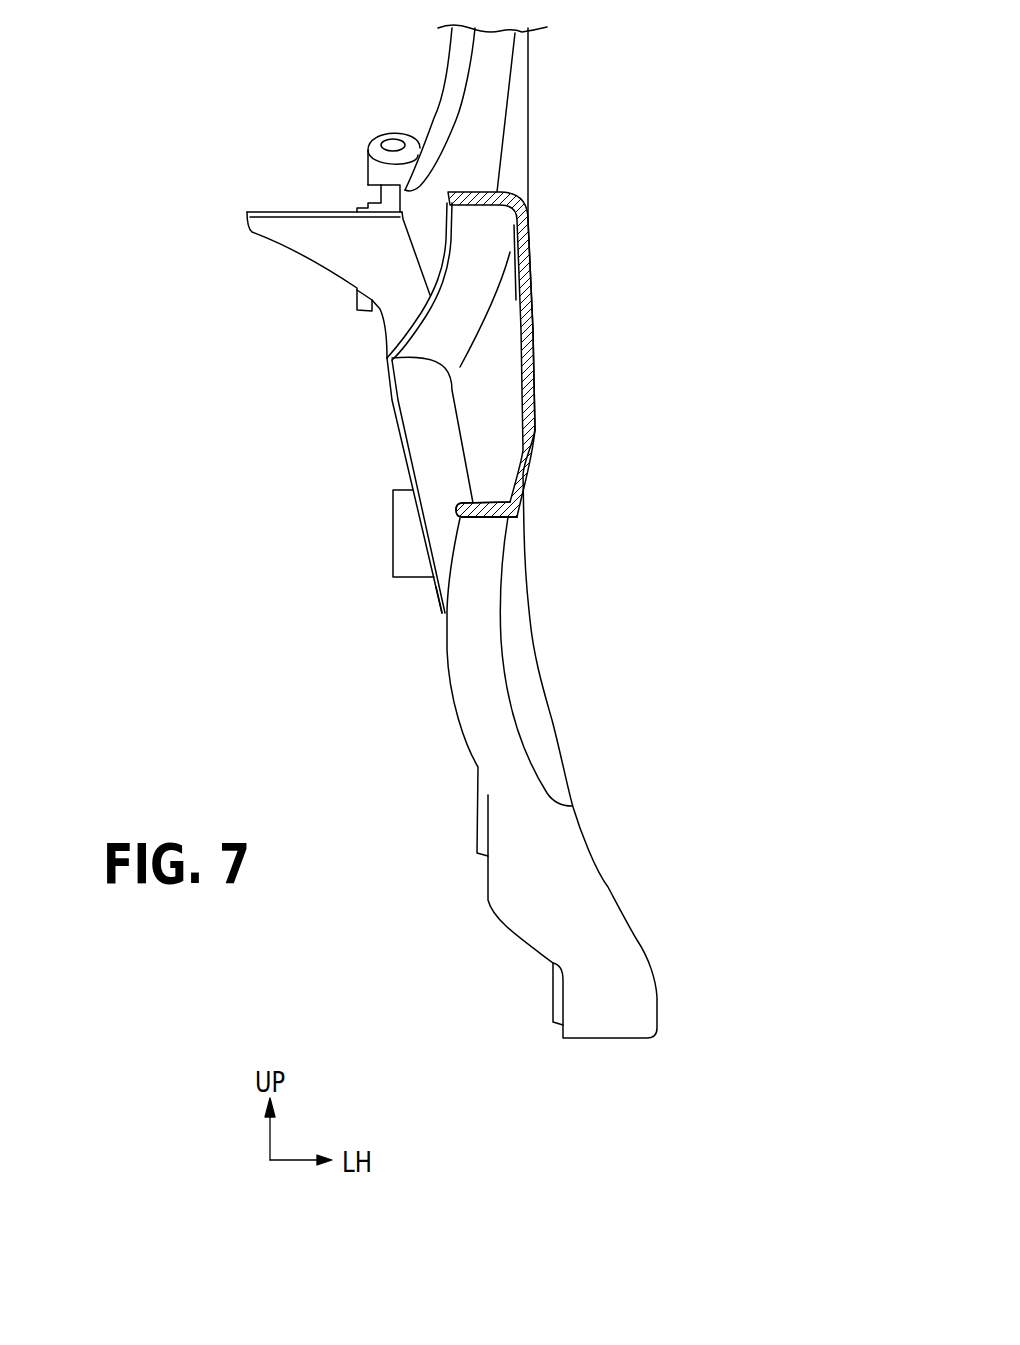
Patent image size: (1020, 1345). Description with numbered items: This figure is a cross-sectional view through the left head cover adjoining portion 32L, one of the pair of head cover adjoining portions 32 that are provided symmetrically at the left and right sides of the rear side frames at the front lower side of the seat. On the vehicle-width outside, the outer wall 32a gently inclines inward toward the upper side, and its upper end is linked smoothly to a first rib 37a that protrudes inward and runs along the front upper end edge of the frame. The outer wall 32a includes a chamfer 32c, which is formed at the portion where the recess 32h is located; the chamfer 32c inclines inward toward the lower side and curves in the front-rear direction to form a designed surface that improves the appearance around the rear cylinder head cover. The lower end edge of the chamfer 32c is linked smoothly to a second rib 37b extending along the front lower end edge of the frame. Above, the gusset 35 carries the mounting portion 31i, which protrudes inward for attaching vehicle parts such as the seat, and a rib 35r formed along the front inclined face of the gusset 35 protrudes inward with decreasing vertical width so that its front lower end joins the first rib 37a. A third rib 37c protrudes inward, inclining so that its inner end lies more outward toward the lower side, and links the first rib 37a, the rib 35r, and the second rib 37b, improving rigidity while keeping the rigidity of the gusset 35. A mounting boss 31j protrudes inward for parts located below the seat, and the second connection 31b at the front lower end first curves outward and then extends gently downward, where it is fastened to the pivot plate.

The mounting portion 31i is at (413, 137).
The gusset 35 is at (377, 203).
The rib 35r is at (323, 257).
The first rib 37a is at (470, 288).
The third rib 37c is at (420, 428).
The mounting boss 31j is at (405, 559).
The second rib 37b is at (463, 585).
The head cover adjoining portion 32 is at (584, 355).
The left head cover adjoining portion 32L is at (534, 325).
The outer wall 32a is at (536, 368).
The chamfer 32c is at (524, 503).
The recess 32h is at (483, 518).
The second connection 31b is at (620, 907).